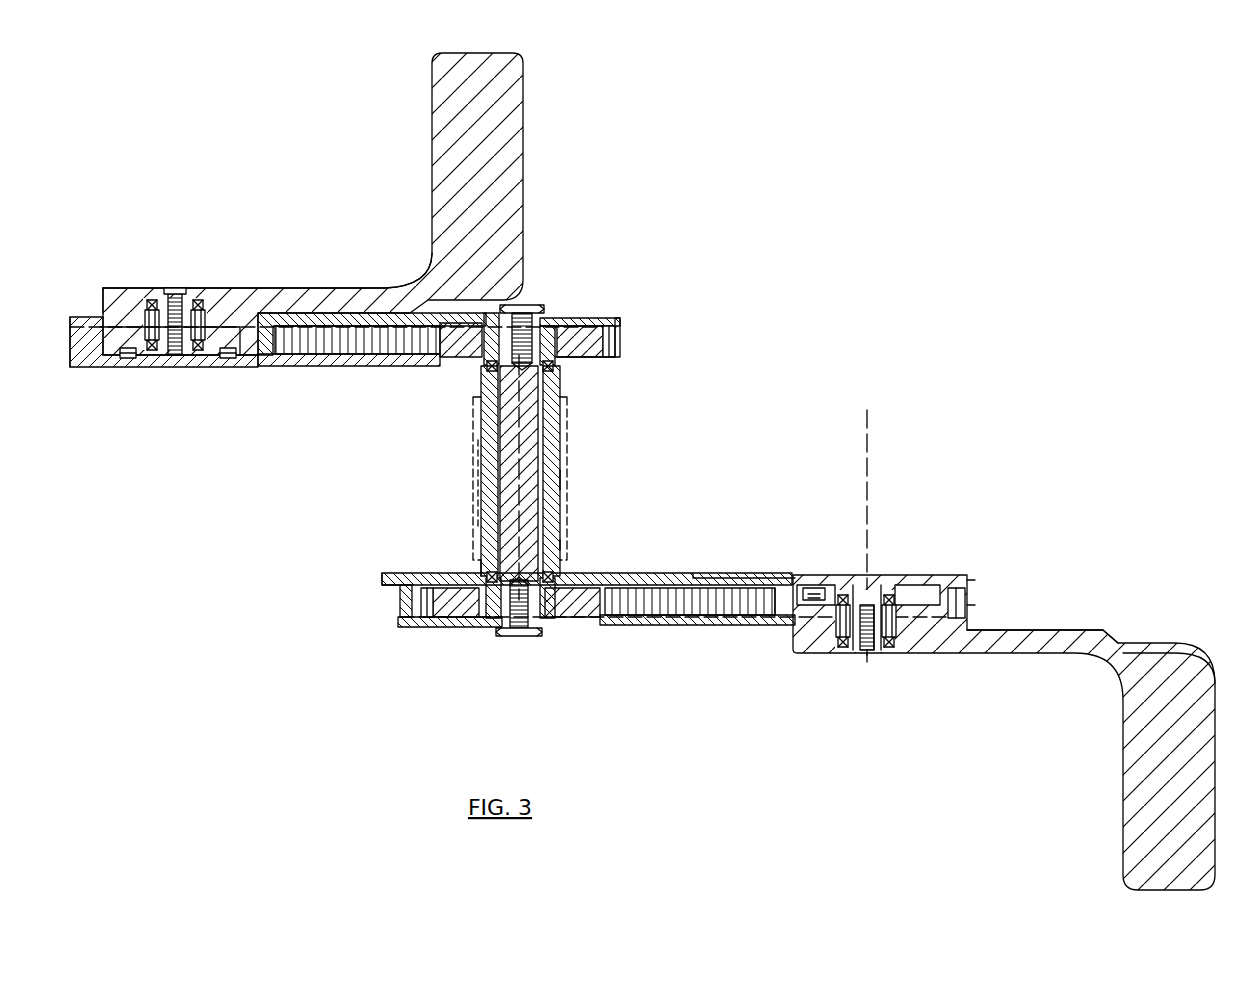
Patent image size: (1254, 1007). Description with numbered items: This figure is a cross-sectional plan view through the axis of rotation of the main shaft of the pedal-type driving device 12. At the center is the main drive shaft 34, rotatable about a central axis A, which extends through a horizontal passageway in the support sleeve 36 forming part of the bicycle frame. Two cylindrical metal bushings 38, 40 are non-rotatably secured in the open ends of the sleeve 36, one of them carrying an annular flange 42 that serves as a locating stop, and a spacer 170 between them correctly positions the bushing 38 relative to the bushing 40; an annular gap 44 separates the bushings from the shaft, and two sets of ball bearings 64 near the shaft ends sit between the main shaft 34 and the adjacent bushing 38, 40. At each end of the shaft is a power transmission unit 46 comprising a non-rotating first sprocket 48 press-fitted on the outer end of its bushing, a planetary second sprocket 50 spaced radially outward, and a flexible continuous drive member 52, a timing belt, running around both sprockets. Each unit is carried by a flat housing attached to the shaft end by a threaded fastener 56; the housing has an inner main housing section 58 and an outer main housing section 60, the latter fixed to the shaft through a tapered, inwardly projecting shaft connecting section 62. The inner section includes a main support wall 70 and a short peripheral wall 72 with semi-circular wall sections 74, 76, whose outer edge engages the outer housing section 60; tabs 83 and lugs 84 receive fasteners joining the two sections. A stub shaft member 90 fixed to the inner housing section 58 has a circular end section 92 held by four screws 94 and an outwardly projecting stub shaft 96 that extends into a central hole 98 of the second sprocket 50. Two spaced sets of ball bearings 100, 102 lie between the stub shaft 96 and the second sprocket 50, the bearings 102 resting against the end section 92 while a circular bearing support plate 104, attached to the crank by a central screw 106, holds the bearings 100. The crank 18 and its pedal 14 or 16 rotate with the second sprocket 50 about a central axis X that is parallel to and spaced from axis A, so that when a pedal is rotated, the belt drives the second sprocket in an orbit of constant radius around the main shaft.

The pedal-type driving device 12 is at (778, 402).
The foot pedal 14 is at (1140, 800).
The foot pedal 16 is at (495, 140).
The crank arm 18 is at (310, 288).
The main drive shaft 34 is at (510, 405).
The support sleeve 36 is at (476, 455).
The bushing 38 is at (552, 372).
The bushing 40 is at (556, 545).
The annular flange 42 is at (484, 572).
The annular gap 44 is at (548, 422).
The power transmission unit 46 is at (292, 356).
The first sprocket 48 is at (590, 322).
The second sprocket 50 is at (262, 355).
The continuous drive member 52 is at (340, 345).
The threaded fastener 56 is at (524, 305).
The inner main housing section 58 is at (660, 573).
The outer main housing section 60 is at (600, 625).
The shaft connecting section 62 is at (552, 320).
The ball bearings 64 is at (490, 366).
The main support wall 70 is at (722, 573).
The peripheral wall 72 is at (164, 342).
The semi-circular wall section 74 is at (400, 612).
The semi-circular wall section 76 is at (972, 583).
The tabs 83 is at (405, 627).
The lugs 84 is at (400, 598).
The stub shaft member 90 is at (132, 358).
The circular end section 92 is at (820, 605).
The screws 94 is at (922, 588).
The stub shaft 96 is at (860, 652).
The central hole 98 is at (150, 300).
The ball bearings 100 is at (200, 300).
The ball bearings 102 is at (185, 355).
The bearing support plate 104 is at (878, 652).
The central screw 106 is at (866, 655).
The spacer 170 is at (556, 476).
The central axis A is at (520, 500).
The central axis X is at (872, 425).